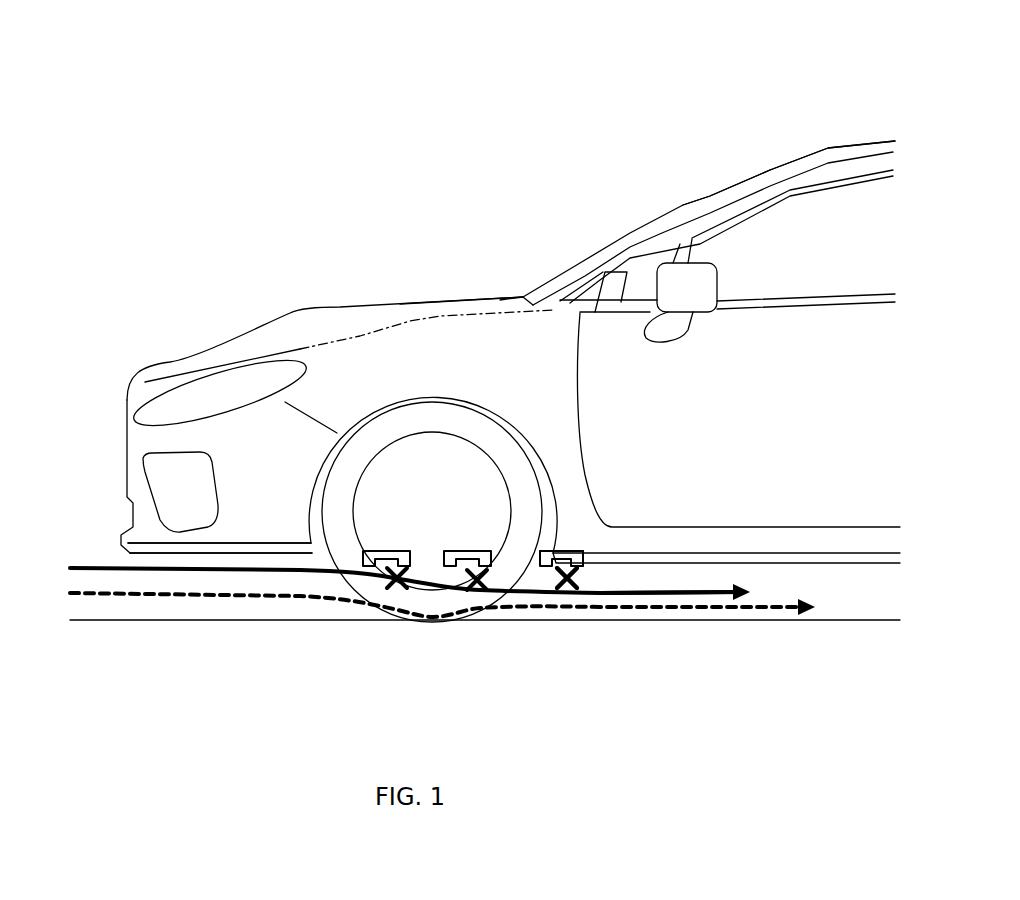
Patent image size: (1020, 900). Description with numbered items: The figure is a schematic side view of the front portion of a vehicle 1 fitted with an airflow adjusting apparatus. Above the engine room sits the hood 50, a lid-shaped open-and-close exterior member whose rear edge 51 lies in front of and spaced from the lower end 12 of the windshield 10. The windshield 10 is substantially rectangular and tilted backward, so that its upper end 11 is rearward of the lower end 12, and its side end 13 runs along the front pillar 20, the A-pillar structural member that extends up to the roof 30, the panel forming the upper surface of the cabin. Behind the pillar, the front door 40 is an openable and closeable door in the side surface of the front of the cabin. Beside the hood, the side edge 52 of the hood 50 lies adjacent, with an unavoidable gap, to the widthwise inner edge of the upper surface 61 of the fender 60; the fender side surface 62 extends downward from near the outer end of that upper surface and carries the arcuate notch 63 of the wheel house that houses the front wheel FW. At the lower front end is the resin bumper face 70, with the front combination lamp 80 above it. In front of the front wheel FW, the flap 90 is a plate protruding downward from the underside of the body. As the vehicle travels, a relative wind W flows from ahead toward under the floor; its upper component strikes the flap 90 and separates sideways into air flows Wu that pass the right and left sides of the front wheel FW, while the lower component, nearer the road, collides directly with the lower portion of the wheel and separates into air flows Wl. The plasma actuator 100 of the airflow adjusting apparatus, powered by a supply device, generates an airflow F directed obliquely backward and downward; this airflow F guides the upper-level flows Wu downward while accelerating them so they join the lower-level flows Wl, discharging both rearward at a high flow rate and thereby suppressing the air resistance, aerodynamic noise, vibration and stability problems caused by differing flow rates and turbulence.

The vehicle 1 is at (221, 144).
The windshield 10 is at (683, 203).
The upper end 11 is at (770, 167).
The lower end 12 is at (512, 300).
The side end 13 is at (710, 200).
The front pillar 20 is at (662, 233).
The roof 30 is at (828, 147).
The front door 40 is at (789, 425).
The hood 50 is at (318, 308).
The rear edge 51 is at (487, 302).
The side edge 52 is at (298, 350).
The fender 60 is at (407, 374).
The upper surface 61 is at (437, 317).
The side surface 62 is at (566, 582).
The arcuate notch 63 is at (435, 394).
The bumper face 70 is at (233, 525).
The front combination lamp 80 is at (170, 386).
The flap 90 is at (303, 580).
The plasma actuator 100 is at (582, 560).
The front wheel FW is at (388, 612).
The relative wind W is at (386, 579).
The upper-level air flows Wu is at (698, 586).
The lower-level air flows Wl is at (460, 605).
The airflow F is at (558, 580).